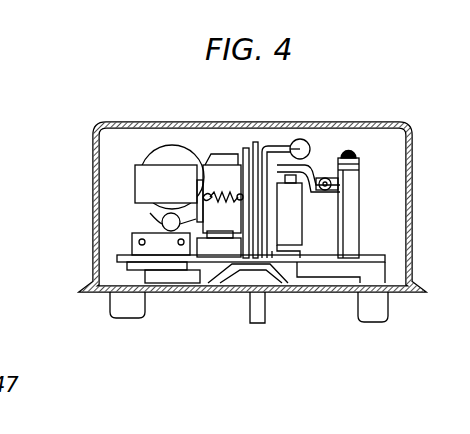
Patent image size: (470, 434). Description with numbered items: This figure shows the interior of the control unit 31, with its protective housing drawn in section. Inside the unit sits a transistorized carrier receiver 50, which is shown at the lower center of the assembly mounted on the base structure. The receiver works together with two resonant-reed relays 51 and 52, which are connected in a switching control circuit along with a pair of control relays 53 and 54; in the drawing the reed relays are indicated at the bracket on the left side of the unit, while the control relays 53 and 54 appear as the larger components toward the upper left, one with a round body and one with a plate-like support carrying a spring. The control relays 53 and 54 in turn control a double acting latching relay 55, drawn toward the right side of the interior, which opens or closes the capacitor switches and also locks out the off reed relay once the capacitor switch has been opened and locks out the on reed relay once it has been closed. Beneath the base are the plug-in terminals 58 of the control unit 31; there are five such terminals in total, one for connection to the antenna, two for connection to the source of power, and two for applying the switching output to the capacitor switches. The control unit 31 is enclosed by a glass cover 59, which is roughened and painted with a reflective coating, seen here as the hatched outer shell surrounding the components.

The control unit 31 is at (89, 144).
The transistorized carrier receiver 50 is at (219, 249).
The resonant-reed relay 51 is at (80, 233).
The resonant-reed relay 52 is at (138, 242).
The control relay 53 is at (215, 160).
The control relay 54 is at (176, 149).
The double acting latching relay 55 is at (271, 196).
The plug-in terminals 58 is at (122, 309).
The glass cover 59 is at (412, 171).